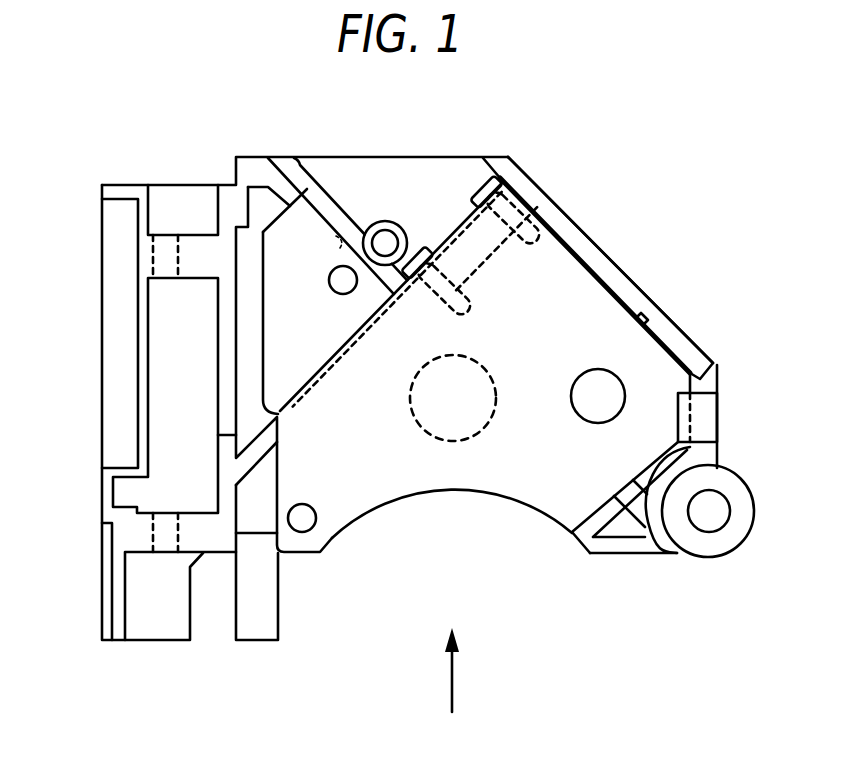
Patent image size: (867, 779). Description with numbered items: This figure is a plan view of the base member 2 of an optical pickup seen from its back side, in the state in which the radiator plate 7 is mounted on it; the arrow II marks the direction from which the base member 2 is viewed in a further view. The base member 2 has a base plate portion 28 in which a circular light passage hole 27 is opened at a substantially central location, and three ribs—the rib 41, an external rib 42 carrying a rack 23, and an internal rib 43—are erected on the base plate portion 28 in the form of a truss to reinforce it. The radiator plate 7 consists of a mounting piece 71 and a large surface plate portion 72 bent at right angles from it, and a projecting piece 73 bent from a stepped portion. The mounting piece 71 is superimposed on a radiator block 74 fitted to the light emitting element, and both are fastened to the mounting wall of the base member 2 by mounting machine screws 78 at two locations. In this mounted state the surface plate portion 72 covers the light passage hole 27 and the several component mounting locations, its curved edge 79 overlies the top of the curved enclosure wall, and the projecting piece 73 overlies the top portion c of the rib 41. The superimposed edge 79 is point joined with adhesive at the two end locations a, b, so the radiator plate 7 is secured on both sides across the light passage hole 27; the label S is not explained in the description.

The base member 2 is at (588, 212).
The radiator plate 7 is at (599, 262).
The rack 23 is at (100, 322).
The light passage hole 27 is at (492, 422).
The base plate portion 28 is at (396, 170).
The rib 41 is at (280, 178).
The external rib 42 is at (223, 347).
The internal rib 43 is at (232, 448).
The mounting piece 71 is at (456, 229).
The surface plate portion 72 is at (620, 310).
The projecting piece 73 is at (282, 230).
The radiator block 74 is at (477, 270).
The mounting machine screw 78 is at (488, 185).
The curved edge 79 is at (380, 507).
The spring S is at (372, 188).
The adhesive joining location a is at (328, 538).
The adhesive joining location b is at (566, 529).
The top portion of the rib c is at (327, 242).
The arrow II is at (452, 695).